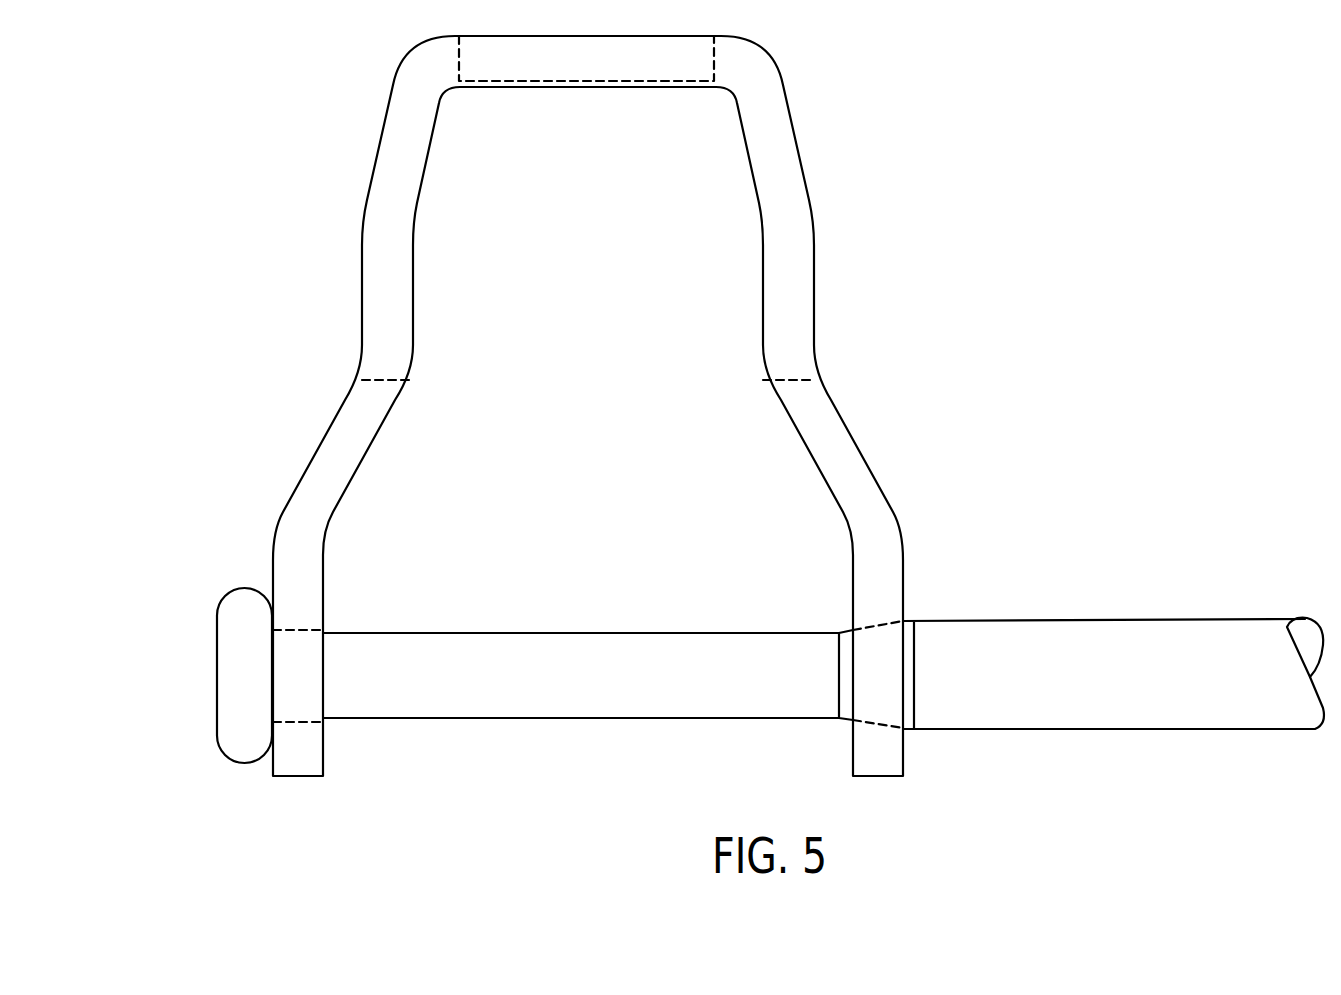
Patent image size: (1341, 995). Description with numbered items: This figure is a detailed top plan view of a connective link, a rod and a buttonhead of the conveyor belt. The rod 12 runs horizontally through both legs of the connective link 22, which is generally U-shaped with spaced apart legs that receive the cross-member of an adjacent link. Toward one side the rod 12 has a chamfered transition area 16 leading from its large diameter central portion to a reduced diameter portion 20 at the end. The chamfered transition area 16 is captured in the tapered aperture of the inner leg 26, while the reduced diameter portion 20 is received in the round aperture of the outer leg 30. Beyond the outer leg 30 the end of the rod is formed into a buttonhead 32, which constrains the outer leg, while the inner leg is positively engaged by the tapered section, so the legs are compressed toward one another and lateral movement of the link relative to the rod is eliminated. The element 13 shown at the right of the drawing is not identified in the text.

The rod 12 is at (1113, 638).
The tube 13 is at (1197, 633).
The chamfered transition area 16 is at (845, 705).
The reduced diameter portion 20 is at (613, 668).
The connective link 22 is at (616, 406).
The inner leg 26 is at (875, 505).
The outer leg 30 is at (325, 458).
The buttonhead 32 is at (242, 600).